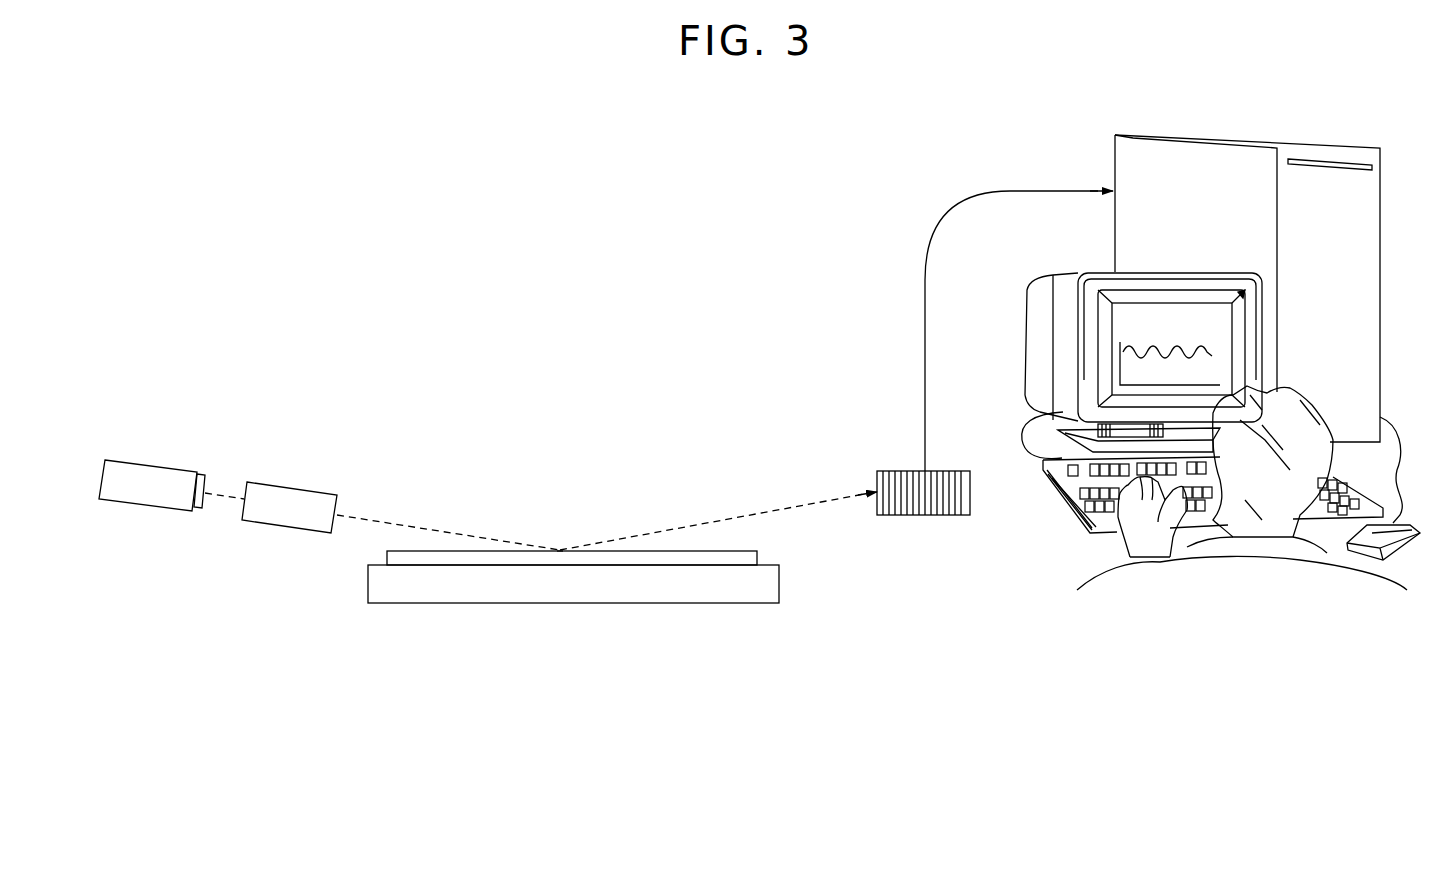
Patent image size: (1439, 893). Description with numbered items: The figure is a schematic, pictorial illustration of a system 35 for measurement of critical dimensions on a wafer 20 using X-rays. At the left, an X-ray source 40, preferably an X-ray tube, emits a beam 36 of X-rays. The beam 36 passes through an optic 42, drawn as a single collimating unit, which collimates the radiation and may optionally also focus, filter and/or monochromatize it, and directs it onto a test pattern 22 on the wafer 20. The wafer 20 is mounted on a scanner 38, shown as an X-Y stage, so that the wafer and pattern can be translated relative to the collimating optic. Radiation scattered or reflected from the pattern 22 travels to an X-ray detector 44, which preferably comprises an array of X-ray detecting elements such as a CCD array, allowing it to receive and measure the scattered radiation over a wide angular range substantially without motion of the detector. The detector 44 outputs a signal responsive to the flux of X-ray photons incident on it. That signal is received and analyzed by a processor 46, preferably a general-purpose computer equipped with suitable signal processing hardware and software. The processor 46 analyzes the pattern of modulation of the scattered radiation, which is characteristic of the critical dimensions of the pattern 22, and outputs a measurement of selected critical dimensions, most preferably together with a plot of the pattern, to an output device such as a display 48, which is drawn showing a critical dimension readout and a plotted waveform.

The wafer 20 is at (387, 553).
The test pattern 22 is at (566, 551).
The system 35 is at (418, 277).
The beam 36 is at (437, 528).
The scanner 38 is at (687, 603).
The X-ray source 40 is at (143, 478).
The optic 42 is at (297, 488).
The X-ray detector 44 is at (900, 516).
The processor 46 is at (1113, 160).
The display 48 is at (1063, 283).